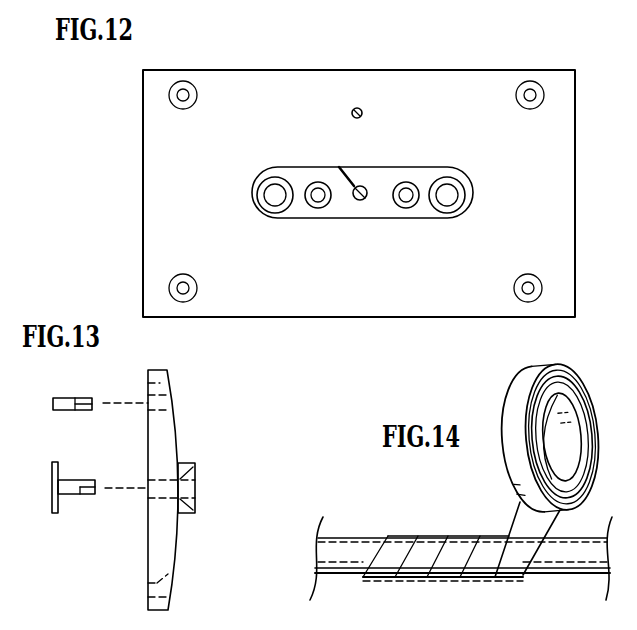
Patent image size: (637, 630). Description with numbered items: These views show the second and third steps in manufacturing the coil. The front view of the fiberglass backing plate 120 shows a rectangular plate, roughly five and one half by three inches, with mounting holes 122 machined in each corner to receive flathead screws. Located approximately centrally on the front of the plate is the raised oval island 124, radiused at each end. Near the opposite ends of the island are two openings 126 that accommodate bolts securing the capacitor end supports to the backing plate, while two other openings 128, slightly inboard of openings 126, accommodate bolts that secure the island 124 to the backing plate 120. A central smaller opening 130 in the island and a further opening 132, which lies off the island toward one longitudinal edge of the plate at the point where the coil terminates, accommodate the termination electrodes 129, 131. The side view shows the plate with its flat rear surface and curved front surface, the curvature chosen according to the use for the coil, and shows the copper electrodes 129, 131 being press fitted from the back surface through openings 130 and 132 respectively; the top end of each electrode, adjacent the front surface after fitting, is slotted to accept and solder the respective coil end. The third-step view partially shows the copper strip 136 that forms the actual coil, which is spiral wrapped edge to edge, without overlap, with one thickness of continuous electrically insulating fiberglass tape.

In FIG. 12, the fiberglass backing plate 120 is at (313, 318).
In FIG. 13, the fiberglass backing plate 120 is at (170, 423).
In FIG. 12, the mounting holes 122 is at (185, 92).
In FIG. 12, the raised oval island 124 is at (388, 220).
In FIG. 13, the raised oval island 124 is at (196, 513).
In FIG. 12, the openings 126 is at (271, 205).
In FIG. 12, the openings 128 is at (318, 193).
In FIG. 12, the termination electrode 129 is at (362, 189).
In FIG. 13, the termination electrode 129 is at (82, 496).
In FIG. 13, the central smaller opening 130 is at (150, 487).
In FIG. 12, the termination electrode 131 is at (365, 113).
In FIG. 13, the termination electrode 131 is at (73, 410).
In FIG. 13, the further opening 132 is at (168, 400).
In FIG. 14, the copper strip 136 is at (336, 545).